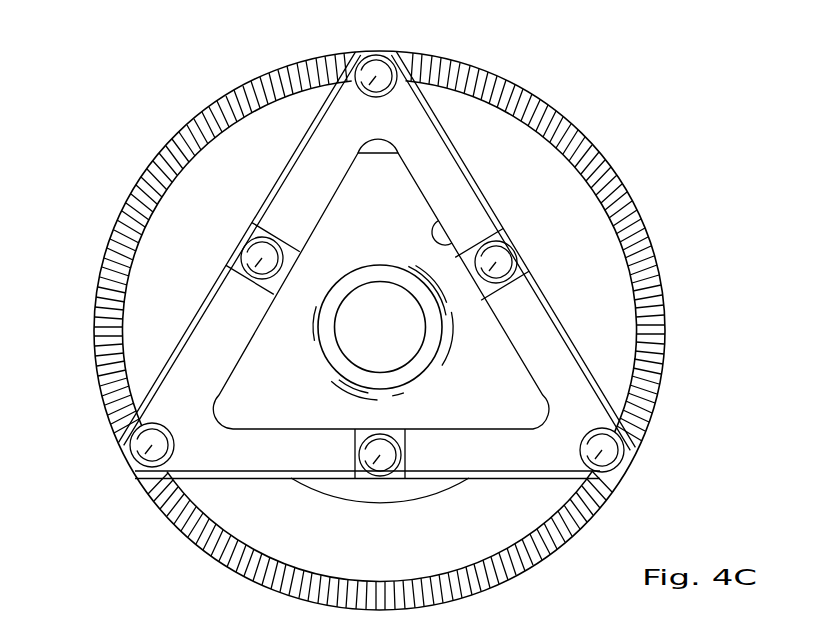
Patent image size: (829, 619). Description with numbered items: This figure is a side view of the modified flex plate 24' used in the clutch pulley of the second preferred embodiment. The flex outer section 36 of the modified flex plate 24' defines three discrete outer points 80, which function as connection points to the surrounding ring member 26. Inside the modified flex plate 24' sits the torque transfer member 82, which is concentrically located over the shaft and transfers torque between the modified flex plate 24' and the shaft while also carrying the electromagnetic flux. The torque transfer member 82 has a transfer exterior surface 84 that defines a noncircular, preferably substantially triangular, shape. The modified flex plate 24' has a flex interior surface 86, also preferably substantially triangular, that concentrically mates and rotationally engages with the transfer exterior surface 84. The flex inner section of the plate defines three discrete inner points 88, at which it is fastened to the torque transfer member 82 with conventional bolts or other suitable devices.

The modified flex plate 24' is at (446, 265).
The ring member 26 is at (643, 372).
The flex outer section 36 is at (423, 92).
The discrete outer points 80 is at (370, 72).
The torque transfer member 82 is at (465, 391).
The transfer exterior surface 84 is at (413, 177).
The flex interior surface 86 is at (440, 216).
The discrete inner points 88 is at (258, 256).